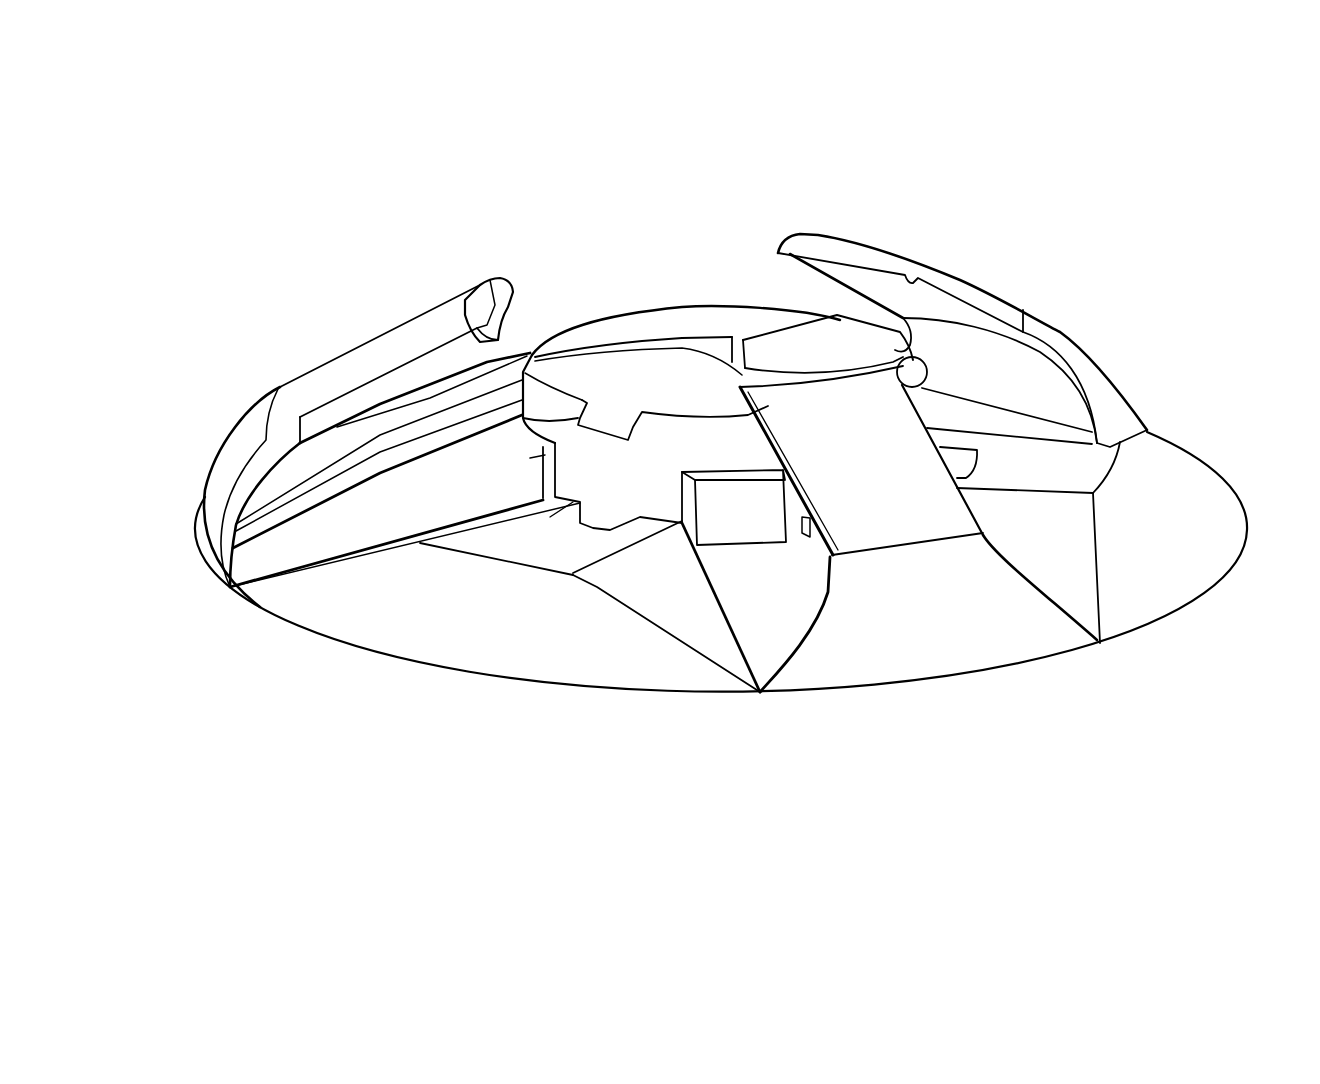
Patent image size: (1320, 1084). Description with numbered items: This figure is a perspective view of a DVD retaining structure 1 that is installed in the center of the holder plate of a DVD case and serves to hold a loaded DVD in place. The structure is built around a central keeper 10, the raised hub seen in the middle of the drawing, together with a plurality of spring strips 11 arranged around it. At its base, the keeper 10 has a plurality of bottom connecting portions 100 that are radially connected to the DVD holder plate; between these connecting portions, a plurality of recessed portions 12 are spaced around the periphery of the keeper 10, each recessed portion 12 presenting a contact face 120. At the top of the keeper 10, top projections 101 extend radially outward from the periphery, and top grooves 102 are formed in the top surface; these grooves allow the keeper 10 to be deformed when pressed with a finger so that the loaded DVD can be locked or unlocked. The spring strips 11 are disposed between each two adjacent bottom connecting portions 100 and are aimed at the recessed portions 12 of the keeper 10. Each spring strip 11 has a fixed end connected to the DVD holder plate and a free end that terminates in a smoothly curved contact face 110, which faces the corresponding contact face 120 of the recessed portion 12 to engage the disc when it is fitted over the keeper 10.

The DVD retaining structure 1 is at (986, 222).
The keeper 10 is at (656, 300).
The bottom connecting portions 100 is at (483, 637).
The top projections 101 is at (608, 415).
The top grooves 102 is at (708, 345).
The spring strips 11 is at (357, 367).
The contact face 110 is at (485, 273).
The recessed portions 12 is at (545, 455).
The contact face 120 is at (690, 475).